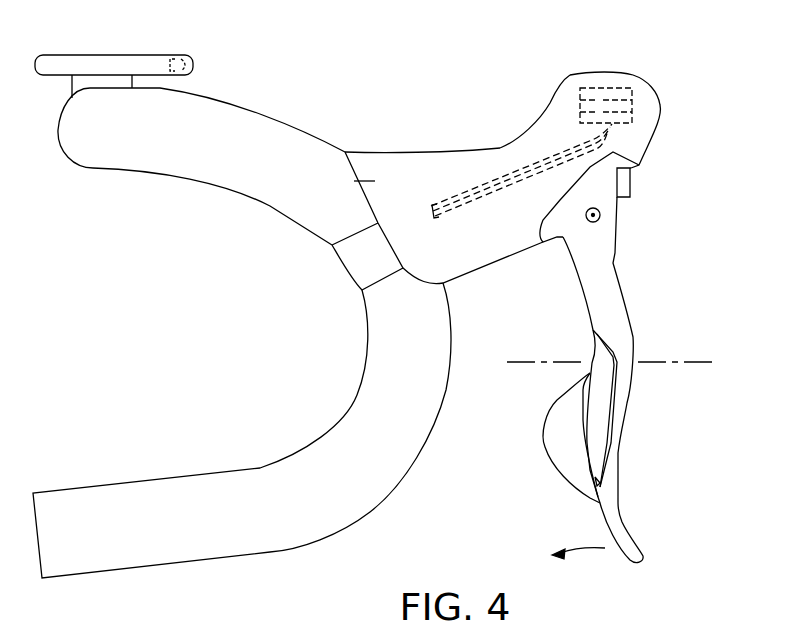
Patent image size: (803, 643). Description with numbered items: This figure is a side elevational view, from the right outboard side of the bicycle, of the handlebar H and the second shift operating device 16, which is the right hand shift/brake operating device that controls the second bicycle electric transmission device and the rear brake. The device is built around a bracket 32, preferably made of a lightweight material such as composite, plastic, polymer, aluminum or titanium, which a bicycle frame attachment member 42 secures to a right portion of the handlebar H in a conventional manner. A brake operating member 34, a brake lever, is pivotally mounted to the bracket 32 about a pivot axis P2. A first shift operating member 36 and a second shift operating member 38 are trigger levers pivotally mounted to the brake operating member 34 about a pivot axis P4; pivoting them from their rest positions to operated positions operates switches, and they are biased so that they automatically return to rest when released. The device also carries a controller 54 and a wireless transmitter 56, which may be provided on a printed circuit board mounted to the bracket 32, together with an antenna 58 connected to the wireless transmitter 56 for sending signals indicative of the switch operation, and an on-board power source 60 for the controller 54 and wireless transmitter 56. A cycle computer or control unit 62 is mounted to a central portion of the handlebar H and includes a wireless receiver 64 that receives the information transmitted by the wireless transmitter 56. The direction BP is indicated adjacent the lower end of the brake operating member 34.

The second shift operating device 16 is at (687, 117).
The bracket 32 is at (423, 173).
The brake operating member 34 is at (627, 302).
The first shift operating member 36 is at (603, 355).
The second shift operating member 38 is at (570, 453).
The bicycle frame attachment member 42 is at (343, 280).
The controller 54 is at (557, 93).
The wireless transmitter 56 is at (647, 148).
The antenna 58 is at (493, 180).
The on-board power source 60 is at (620, 88).
The control unit 62 is at (97, 63).
The wireless receiver 64 is at (195, 63).
The handlebar H is at (258, 142).
The pivot axis P2 is at (598, 222).
The pivot axis P4 is at (695, 363).
The brake operating direction BP is at (583, 557).